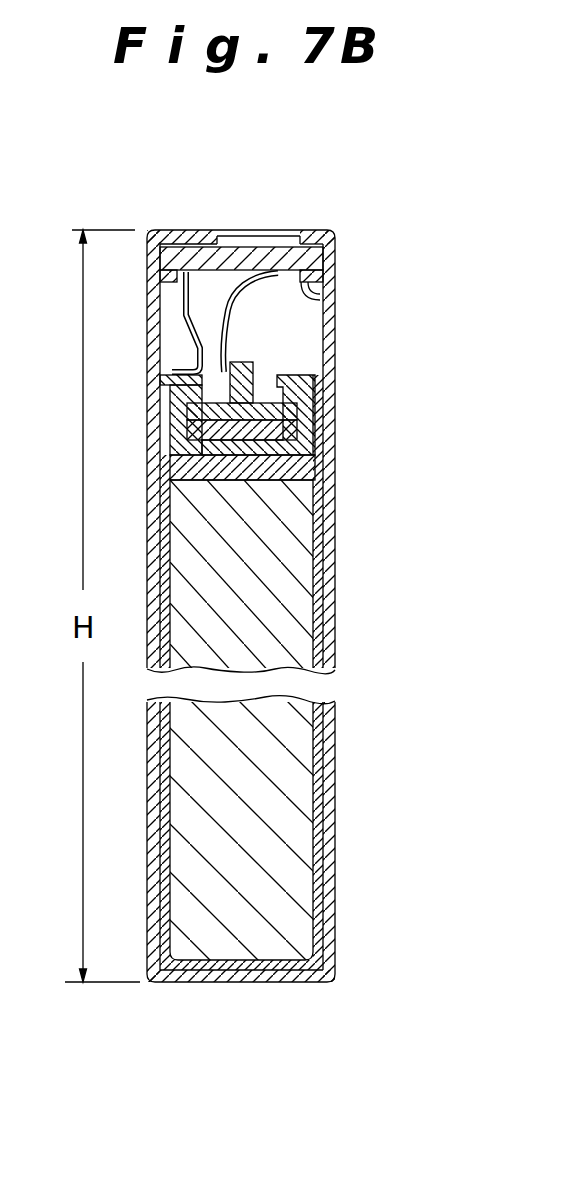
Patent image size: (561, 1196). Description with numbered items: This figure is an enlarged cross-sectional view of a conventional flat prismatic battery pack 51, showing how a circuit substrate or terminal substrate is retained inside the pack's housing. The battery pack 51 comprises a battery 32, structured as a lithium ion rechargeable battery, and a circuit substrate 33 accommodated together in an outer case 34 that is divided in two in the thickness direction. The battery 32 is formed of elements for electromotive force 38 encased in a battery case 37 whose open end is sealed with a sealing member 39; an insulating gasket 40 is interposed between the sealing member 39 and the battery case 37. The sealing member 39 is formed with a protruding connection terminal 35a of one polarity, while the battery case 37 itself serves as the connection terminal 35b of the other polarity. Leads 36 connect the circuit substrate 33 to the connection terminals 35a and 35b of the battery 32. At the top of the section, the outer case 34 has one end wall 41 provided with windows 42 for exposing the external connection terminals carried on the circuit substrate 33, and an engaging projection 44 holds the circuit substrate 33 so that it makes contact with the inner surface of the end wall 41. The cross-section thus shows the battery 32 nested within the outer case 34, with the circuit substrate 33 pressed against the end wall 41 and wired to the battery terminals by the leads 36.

The flat prismatic battery pack 51 is at (164, 205).
The battery 32 is at (336, 778).
The circuit substrate 33 is at (312, 254).
The outer case 34 is at (147, 927).
The connection terminal 35a is at (258, 360).
The connection terminal 35b is at (170, 378).
The leads 36 is at (220, 333).
The battery case 37 is at (318, 750).
The elements for electromotive force 38 is at (262, 760).
The sealing member 39 is at (318, 414).
The insulating gasket 40 is at (318, 450).
The end wall 41 is at (197, 233).
The windows 42 is at (292, 233).
The engaging projection 44 is at (316, 297).